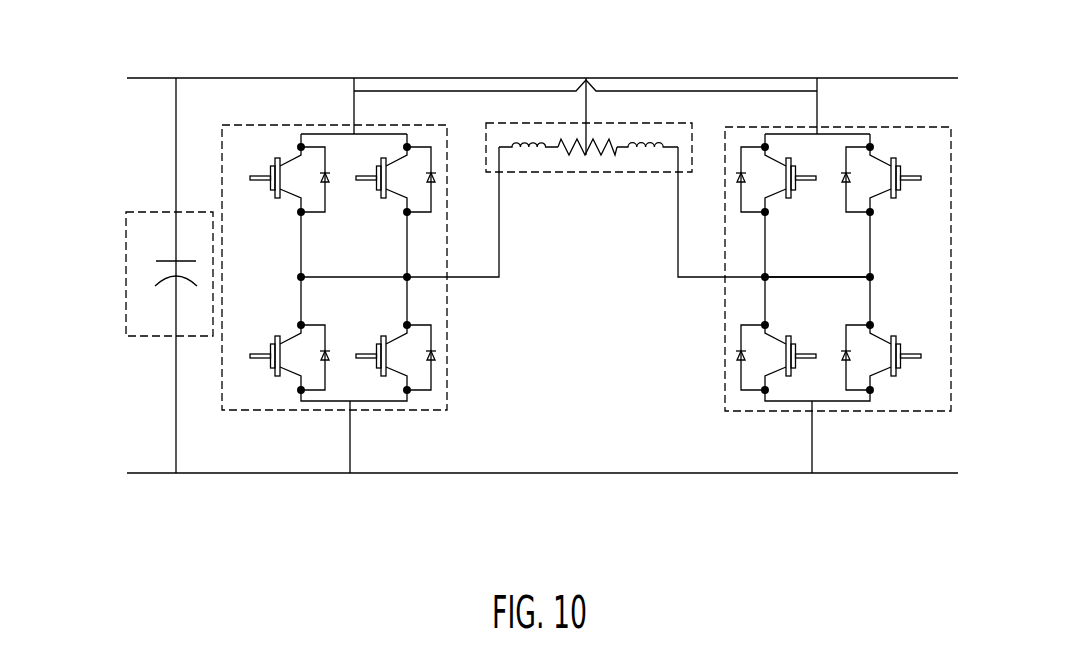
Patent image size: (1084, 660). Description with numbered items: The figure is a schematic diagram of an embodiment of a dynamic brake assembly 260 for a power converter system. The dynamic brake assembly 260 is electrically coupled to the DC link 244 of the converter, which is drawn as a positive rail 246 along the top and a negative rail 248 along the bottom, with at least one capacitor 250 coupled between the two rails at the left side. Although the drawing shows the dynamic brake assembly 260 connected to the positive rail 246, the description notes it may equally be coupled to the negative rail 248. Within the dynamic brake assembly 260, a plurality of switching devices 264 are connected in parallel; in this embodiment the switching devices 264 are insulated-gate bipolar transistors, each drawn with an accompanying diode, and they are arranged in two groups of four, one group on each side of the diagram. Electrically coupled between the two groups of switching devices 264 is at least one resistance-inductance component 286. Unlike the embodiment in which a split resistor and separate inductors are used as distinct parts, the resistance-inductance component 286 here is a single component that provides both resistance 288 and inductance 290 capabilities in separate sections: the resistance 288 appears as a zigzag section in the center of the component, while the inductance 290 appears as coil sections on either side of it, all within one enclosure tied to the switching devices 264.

The DC link 244 is at (100, 178).
The positive rail 246 is at (346, 77).
The negative rail 248 is at (329, 475).
The capacitor 250 is at (124, 280).
The dynamic brake assembly 260 is at (753, 33).
The switching devices 264 is at (284, 207).
The resistance-inductance component 286 is at (612, 176).
The resistance 288 is at (588, 164).
The inductance 290 is at (532, 140).